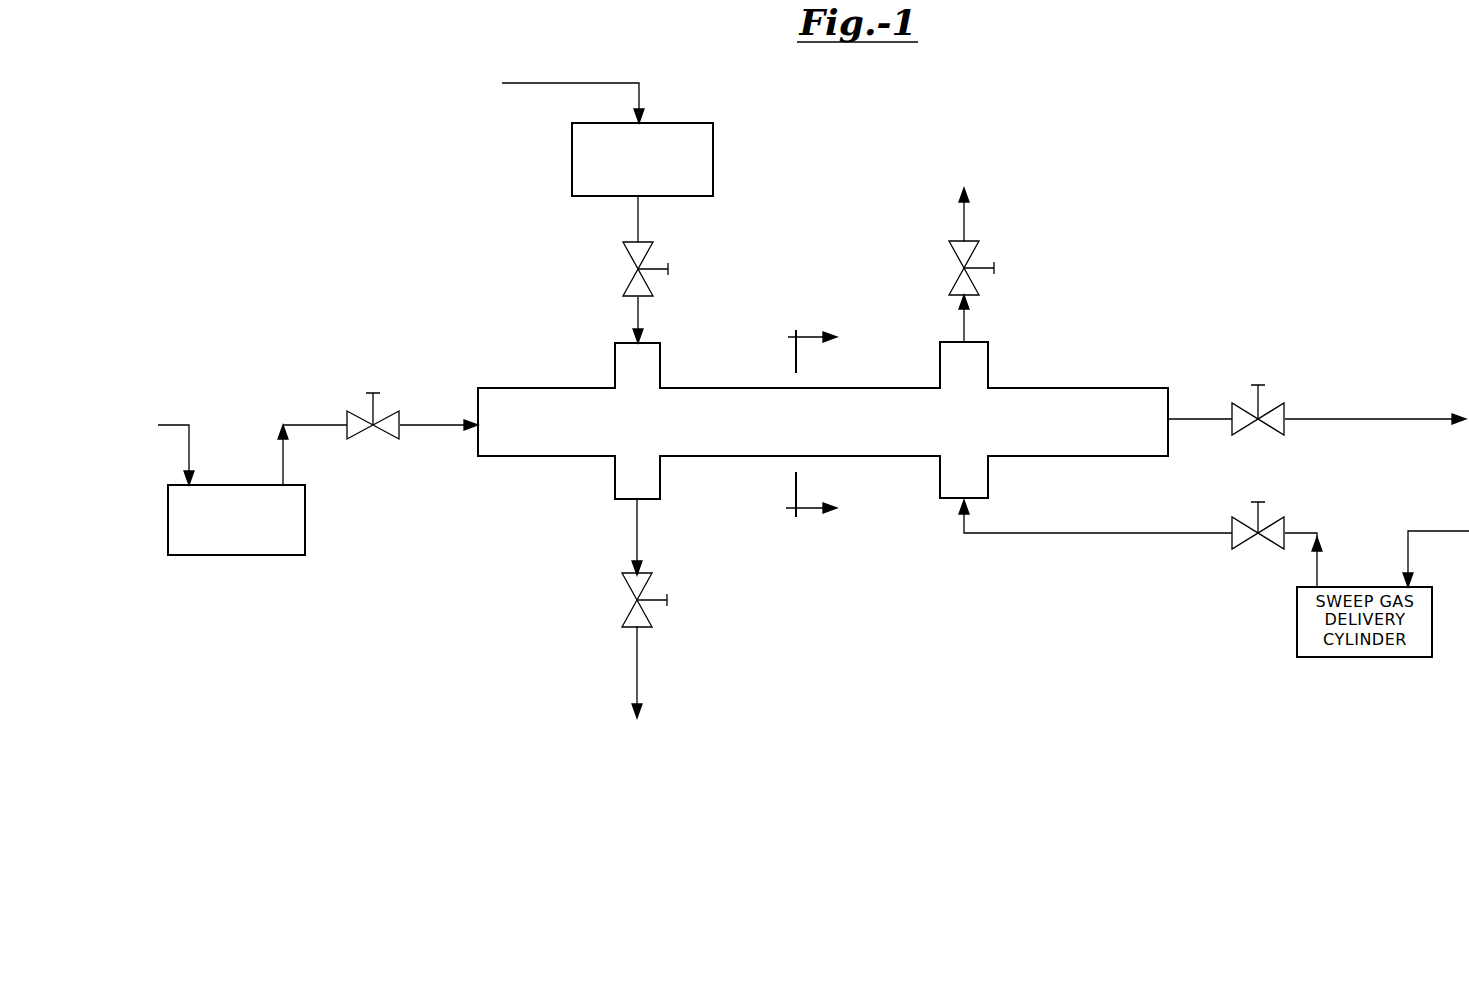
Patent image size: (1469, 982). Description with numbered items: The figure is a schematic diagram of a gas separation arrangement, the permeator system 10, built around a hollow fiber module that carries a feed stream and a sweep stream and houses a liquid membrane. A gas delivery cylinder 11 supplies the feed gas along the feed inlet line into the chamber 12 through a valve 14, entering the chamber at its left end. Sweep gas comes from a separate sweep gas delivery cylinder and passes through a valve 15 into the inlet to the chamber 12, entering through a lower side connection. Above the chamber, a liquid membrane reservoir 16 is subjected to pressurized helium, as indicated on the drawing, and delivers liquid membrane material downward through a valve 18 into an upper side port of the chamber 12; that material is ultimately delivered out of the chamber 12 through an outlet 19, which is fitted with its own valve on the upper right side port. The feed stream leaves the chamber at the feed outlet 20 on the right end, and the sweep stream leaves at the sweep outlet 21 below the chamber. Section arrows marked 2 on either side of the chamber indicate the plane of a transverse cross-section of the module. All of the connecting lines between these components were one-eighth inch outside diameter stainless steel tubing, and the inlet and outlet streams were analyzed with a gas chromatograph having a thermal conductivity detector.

The permeator system 10 is at (440, 195).
The gas delivery cylinder 11 is at (305, 535).
The chamber 12 is at (1050, 388).
The valve 14 is at (395, 410).
The valve 15 is at (1275, 518).
The liquid membrane reservoir 16 is at (713, 180).
The valve 18 is at (650, 242).
The outlet 19 is at (978, 242).
The feed outlet 20 is at (1275, 405).
The sweep outlet 21 is at (648, 575).
The section line 2- 2 is at (819, 422).